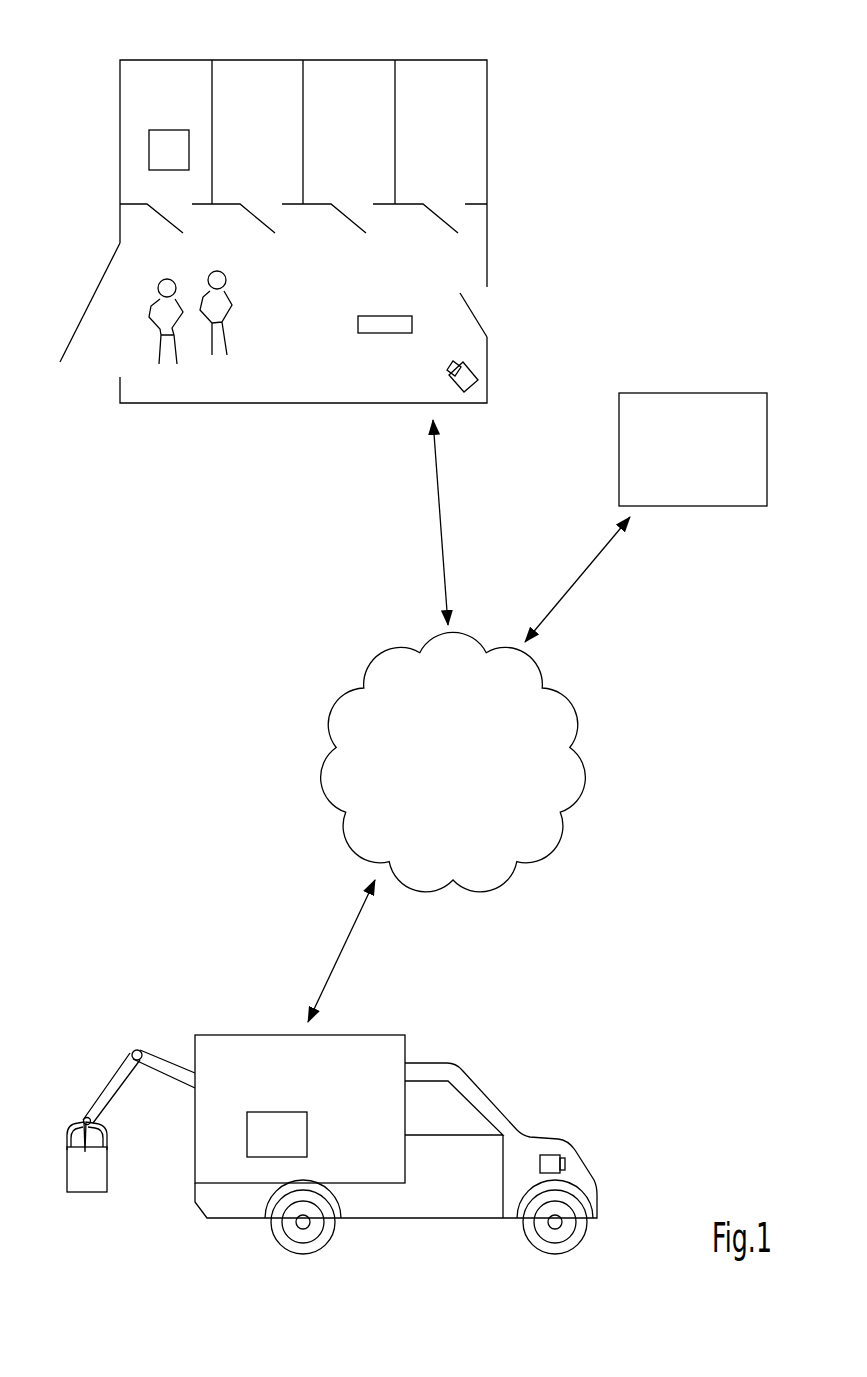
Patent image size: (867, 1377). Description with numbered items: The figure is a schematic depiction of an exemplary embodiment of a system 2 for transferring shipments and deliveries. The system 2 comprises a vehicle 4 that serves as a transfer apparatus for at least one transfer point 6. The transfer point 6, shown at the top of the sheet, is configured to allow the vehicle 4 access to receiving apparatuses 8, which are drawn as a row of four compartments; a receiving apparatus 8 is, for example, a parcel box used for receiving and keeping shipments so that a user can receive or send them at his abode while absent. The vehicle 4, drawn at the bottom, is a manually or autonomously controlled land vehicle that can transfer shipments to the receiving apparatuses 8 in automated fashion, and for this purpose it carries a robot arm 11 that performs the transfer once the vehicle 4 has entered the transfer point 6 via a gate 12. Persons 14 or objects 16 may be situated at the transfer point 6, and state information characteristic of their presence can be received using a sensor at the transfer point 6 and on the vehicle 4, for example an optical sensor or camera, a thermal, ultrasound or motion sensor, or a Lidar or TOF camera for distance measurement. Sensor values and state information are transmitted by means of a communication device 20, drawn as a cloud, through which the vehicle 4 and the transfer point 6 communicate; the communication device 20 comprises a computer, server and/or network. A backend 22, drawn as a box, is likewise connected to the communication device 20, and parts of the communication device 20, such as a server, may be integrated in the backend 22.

The system 2 is at (693, 90).
The vehicle 4 is at (582, 1012).
The transfer point 6 is at (120, 460).
The receiving apparatus 8 is at (167, 72).
The robot arm 11 is at (110, 1088).
The gate 12 is at (98, 287).
The persons 14 is at (147, 320).
The objects 16 is at (386, 322).
The communication device 20 is at (442, 769).
The backend 22 is at (683, 457).